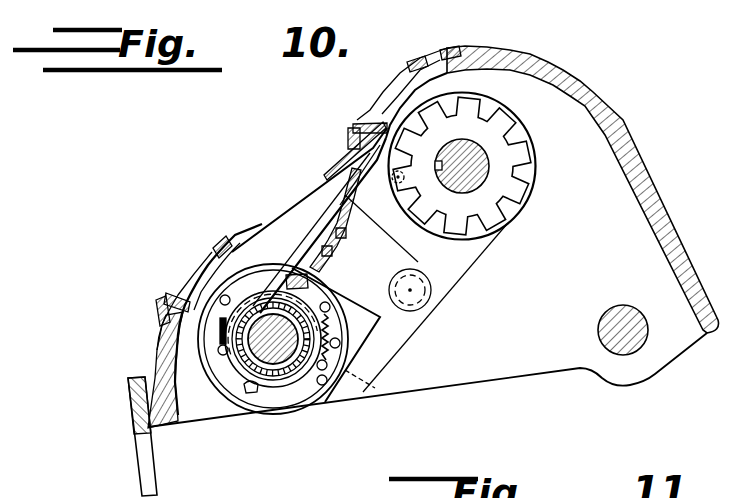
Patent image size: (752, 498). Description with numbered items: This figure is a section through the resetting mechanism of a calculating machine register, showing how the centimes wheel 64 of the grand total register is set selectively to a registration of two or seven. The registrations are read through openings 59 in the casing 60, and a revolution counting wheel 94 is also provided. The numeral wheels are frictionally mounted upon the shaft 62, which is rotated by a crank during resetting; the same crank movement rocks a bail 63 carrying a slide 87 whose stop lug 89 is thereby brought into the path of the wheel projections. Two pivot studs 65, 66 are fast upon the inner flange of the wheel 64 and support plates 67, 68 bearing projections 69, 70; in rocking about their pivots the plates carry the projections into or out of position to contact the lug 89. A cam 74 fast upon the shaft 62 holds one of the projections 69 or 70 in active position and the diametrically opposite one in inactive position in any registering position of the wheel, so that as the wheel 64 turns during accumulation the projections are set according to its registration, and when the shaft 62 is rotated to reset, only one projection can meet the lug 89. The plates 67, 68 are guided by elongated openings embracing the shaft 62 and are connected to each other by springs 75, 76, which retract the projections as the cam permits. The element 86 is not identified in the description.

The openings 59 is at (205, 268).
The casing 60 is at (503, 50).
The shaft 62 is at (277, 355).
The bail 63 is at (418, 262).
The centimes wheel 64 is at (217, 388).
The pivot stud 65 is at (218, 302).
The pivot stud 66 is at (345, 388).
The plate 67 is at (232, 265).
The plate 68 is at (312, 378).
The projection 69 is at (293, 280).
The projection 70 is at (248, 392).
The cam 74 is at (248, 312).
The spring 75 is at (334, 331).
The spring 76 is at (217, 334).
The spring 86 is at (336, 348).
The slide 87 is at (346, 236).
The stop lug 89 is at (308, 280).
The revolution counting wheel 94 is at (537, 177).